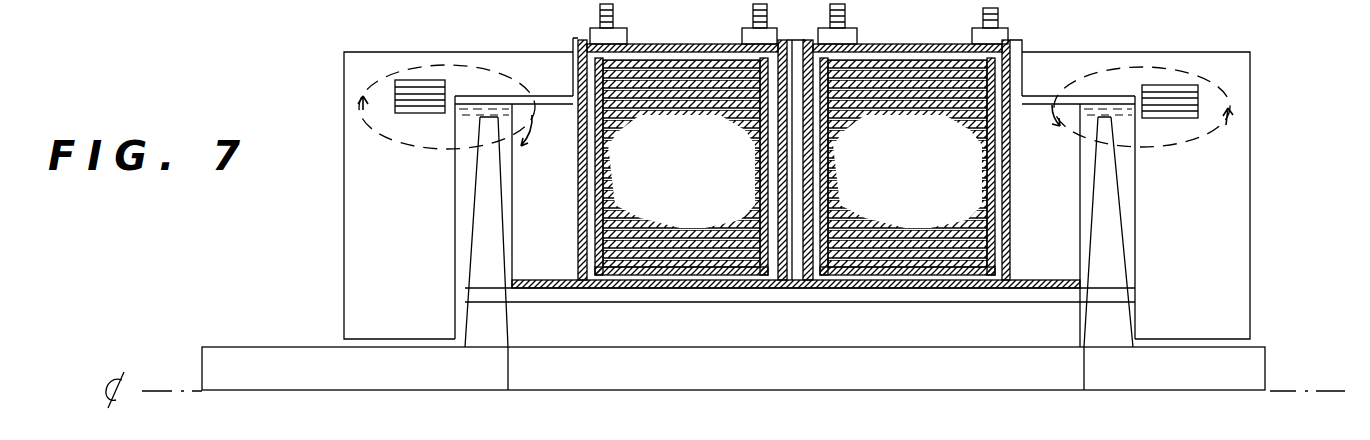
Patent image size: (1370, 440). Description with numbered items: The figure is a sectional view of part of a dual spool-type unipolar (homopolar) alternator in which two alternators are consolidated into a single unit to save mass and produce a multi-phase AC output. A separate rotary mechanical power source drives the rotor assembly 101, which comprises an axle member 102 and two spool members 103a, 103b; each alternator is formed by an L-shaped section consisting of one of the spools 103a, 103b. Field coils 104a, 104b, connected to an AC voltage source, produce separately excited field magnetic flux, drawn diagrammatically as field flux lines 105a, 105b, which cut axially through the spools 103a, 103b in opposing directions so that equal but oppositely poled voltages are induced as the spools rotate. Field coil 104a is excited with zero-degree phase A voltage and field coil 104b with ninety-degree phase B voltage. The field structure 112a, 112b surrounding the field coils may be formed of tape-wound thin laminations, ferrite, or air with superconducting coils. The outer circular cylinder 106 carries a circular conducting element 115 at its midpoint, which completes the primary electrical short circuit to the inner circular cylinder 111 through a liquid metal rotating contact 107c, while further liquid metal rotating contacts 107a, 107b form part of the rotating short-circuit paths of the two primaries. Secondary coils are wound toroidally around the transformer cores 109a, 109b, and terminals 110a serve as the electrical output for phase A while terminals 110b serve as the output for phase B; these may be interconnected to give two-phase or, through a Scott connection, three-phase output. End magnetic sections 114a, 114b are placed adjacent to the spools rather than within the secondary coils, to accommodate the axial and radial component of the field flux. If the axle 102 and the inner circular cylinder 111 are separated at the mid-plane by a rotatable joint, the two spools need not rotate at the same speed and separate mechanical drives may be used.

The rotor assembly 101 is at (252, 347).
The axle member 102 is at (380, 382).
The spool member 103a is at (487, 252).
The spool member 103b is at (1214, 233).
The field coil 104a is at (393, 82).
The field coil 104b is at (1198, 95).
The field flux lines 105a is at (494, 31).
The field flux lines 105b is at (1204, 41).
The outer circular cylinder 106 is at (1020, 43).
The liquid metal rotating contact 107a is at (503, 152).
The liquid metal rotating contact 107b is at (1118, 120).
The liquid metal rotating contact 107c is at (857, 334).
The transformer core 109a is at (716, 183).
The transformer core 109b is at (937, 198).
The terminals 110a is at (753, 10).
The terminals 110b is at (985, 22).
The inner circular cylinder 111 is at (945, 291).
The field structure 112a is at (385, 338).
The field structure 112b is at (1334, 291).
The end magnetic section 114a is at (586, 223).
The end magnetic section 114b is at (1084, 216).
The circular conducting element 115 is at (793, 165).